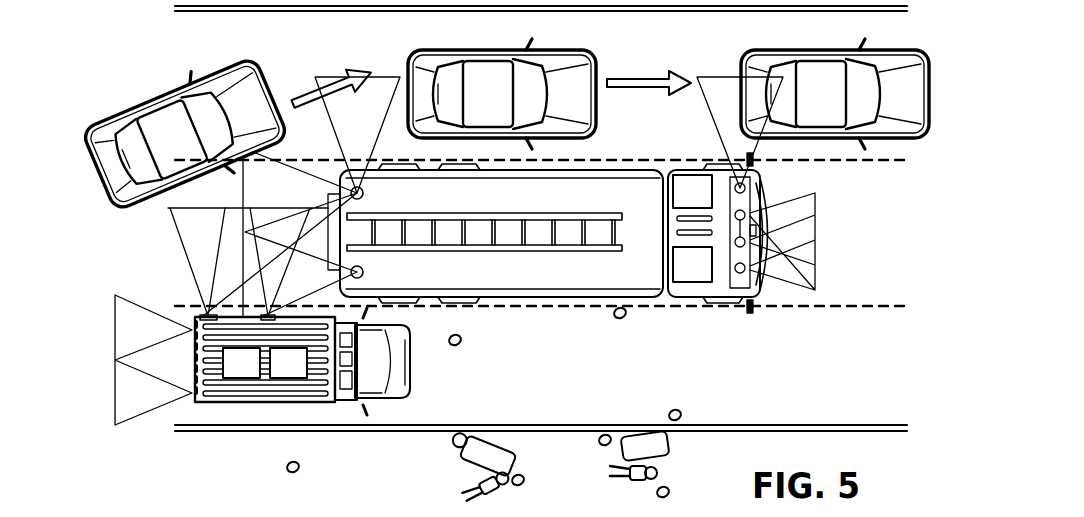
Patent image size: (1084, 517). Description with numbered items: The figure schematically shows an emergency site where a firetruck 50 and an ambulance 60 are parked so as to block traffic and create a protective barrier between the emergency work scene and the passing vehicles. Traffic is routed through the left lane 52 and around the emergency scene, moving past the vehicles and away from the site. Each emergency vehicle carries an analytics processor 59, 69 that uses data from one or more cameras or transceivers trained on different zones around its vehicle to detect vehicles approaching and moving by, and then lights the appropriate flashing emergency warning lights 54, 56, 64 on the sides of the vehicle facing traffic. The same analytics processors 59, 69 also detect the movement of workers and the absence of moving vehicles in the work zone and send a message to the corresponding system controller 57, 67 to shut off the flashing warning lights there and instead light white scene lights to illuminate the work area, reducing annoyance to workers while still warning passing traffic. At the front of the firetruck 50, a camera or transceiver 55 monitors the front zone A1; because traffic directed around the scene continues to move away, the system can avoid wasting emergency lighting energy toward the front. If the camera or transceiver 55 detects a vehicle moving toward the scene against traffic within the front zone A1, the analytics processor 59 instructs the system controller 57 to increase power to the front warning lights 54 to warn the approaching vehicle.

The firetruck 50 is at (607, 237).
The left lane 52 is at (158, 76).
The front warning lights 54 is at (737, 211).
The camera or transceiver 55 is at (757, 231).
The flashing emergency warning lights 56 is at (363, 193).
The system controller 57 is at (705, 197).
The analytics processor 59 is at (705, 271).
The ambulance 60 is at (302, 327).
The flashing emergency warning lights 64 is at (200, 315).
The system controller 67 is at (301, 375).
The analytics processor 69 is at (254, 375).
The front zone A1 is at (888, 232).